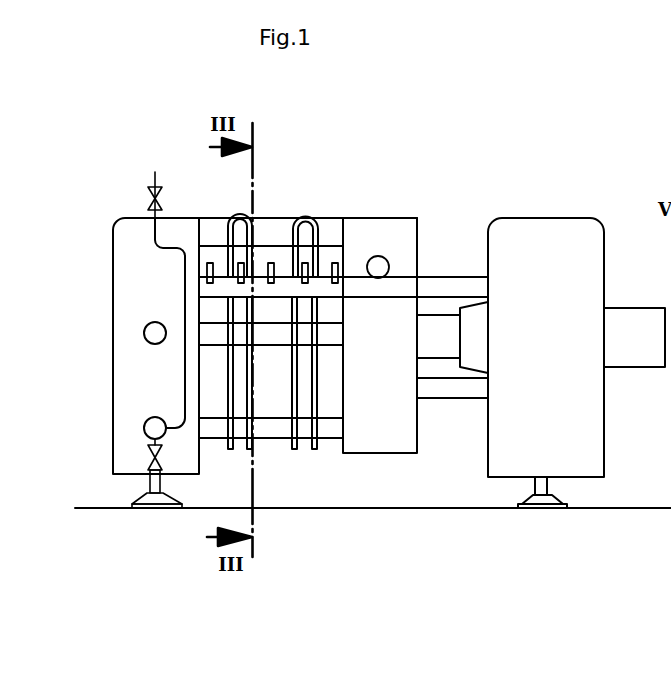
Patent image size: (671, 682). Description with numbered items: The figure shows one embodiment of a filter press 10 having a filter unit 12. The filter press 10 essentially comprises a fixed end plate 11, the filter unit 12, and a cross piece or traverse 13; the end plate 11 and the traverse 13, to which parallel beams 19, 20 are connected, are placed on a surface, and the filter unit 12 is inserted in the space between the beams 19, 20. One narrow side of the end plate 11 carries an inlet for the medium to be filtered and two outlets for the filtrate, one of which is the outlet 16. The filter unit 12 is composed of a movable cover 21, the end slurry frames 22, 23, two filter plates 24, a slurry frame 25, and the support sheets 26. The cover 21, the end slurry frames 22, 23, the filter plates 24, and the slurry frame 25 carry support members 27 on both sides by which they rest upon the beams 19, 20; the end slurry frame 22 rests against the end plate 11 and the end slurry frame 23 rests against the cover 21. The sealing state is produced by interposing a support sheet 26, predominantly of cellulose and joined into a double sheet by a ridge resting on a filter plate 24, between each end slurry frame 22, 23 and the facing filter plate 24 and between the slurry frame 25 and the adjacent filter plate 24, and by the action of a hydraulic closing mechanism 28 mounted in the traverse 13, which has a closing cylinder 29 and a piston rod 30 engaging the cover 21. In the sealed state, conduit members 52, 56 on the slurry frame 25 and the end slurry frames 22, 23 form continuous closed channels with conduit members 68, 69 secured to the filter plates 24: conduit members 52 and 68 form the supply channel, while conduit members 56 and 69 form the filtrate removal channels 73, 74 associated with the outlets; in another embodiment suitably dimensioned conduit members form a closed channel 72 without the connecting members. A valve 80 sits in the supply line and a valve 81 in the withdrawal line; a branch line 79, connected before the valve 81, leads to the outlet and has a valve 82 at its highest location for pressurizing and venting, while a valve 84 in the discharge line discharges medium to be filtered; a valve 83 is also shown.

The filter press 10 is at (594, 147).
The fixed end plate 11 is at (184, 283).
The filter unit 12 is at (334, 466).
The cross piece or traverse 13 is at (592, 470).
The outlet for the filtrate 16 is at (133, 237).
The beam 19 is at (463, 286).
The beam 20 is at (480, 393).
The movable cover 21 is at (405, 242).
The end slurry frame 22 is at (210, 362).
The end slurry frame 23 is at (333, 400).
The filter plate 24 is at (243, 315).
The slurry frame 25 is at (259, 414).
The support sheet 26 is at (295, 395).
The support member 27 is at (273, 264).
The hydraulic closing mechanism 28 is at (629, 401).
The closing cylinder 29 is at (632, 325).
The piston rod 30 is at (436, 342).
The conduit member 52 is at (243, 336).
The conduit member 56 is at (210, 232).
The conduit member 68 is at (277, 335).
The conduit member 69 is at (243, 236).
The closed channel 72 is at (344, 307).
The filtrate removal channel 73 is at (313, 475).
The filtrate removal channel 74 is at (311, 196).
The branch line 79 is at (242, 318).
The valve 80 is at (144, 333).
The valve 81 is at (144, 430).
The valve 82 is at (155, 225).
The drain valve 83 is at (146, 452).
The valve 84 is at (670, 548).